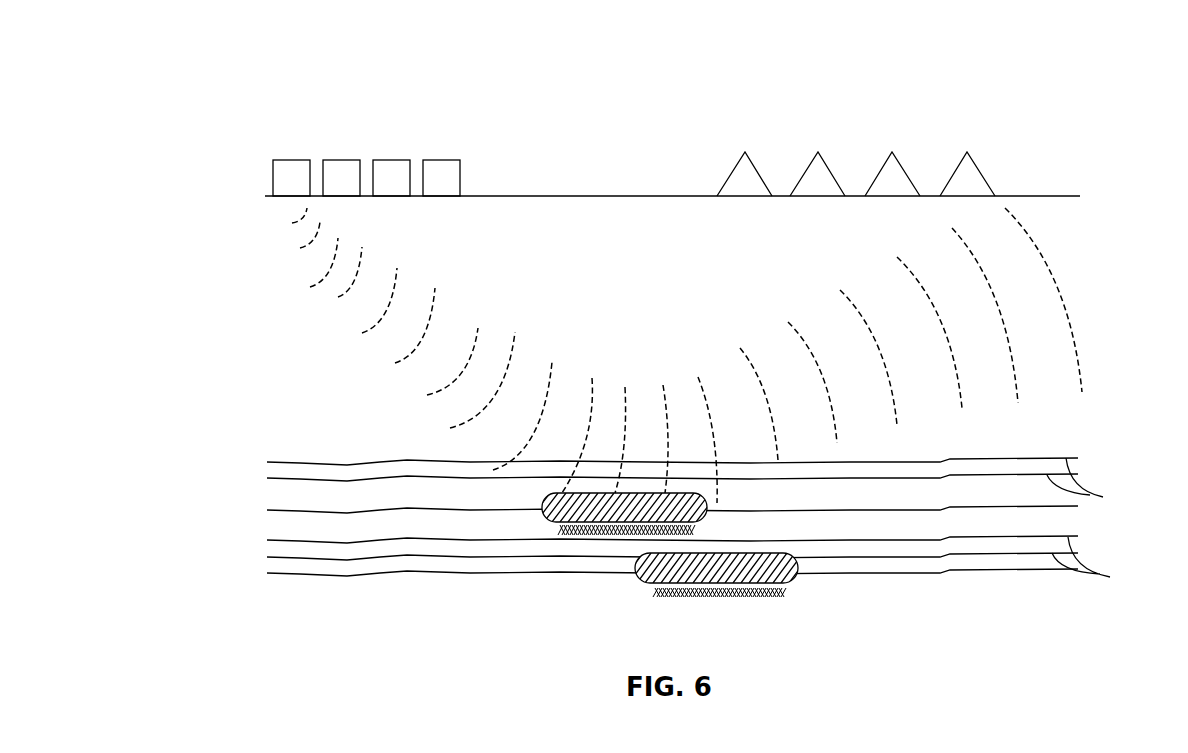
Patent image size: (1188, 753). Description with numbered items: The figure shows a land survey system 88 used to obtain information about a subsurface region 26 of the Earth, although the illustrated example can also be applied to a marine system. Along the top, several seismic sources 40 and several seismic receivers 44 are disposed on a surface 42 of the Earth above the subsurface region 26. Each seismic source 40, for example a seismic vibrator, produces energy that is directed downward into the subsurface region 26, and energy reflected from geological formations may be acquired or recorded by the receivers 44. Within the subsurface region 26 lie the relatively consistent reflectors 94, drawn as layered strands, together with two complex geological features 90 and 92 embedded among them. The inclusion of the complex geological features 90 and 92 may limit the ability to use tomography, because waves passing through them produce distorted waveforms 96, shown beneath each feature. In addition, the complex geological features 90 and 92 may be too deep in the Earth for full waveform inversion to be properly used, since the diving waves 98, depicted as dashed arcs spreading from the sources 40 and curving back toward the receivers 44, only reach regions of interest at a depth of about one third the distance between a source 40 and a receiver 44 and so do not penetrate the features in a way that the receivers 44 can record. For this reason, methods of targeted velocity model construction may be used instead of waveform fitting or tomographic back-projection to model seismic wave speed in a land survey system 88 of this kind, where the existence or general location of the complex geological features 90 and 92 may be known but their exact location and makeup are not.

The subsurface region 26 is at (260, 432).
The seismic source 40 is at (441, 160).
The surface 42 is at (617, 195).
The seismic receiver 44 is at (967, 152).
The land survey system 88 is at (824, 56).
The complex geological feature 90 is at (548, 522).
The complex geological feature 92 is at (797, 585).
The reflectors 94 is at (1092, 525).
The distorted waveforms 96 is at (593, 535).
The diving waves 98 is at (318, 268).